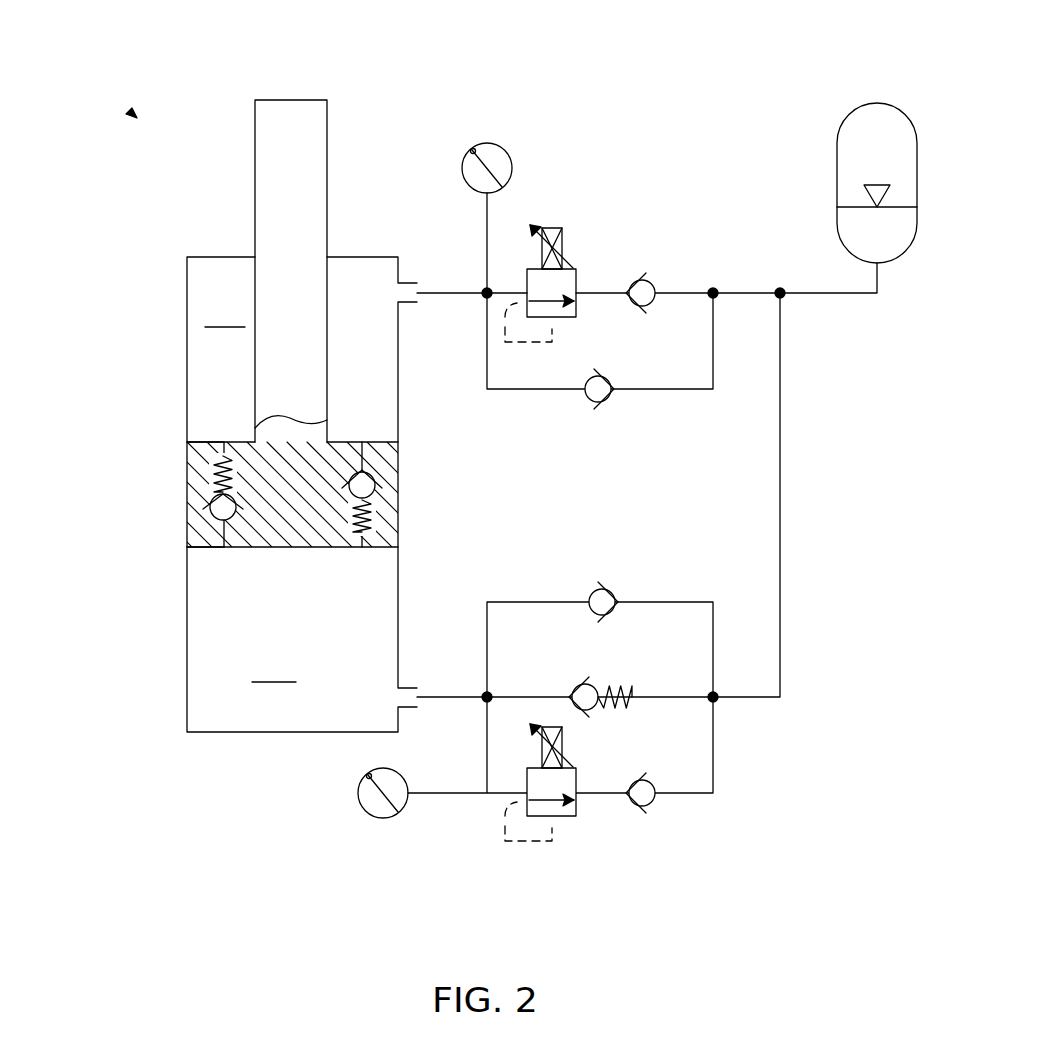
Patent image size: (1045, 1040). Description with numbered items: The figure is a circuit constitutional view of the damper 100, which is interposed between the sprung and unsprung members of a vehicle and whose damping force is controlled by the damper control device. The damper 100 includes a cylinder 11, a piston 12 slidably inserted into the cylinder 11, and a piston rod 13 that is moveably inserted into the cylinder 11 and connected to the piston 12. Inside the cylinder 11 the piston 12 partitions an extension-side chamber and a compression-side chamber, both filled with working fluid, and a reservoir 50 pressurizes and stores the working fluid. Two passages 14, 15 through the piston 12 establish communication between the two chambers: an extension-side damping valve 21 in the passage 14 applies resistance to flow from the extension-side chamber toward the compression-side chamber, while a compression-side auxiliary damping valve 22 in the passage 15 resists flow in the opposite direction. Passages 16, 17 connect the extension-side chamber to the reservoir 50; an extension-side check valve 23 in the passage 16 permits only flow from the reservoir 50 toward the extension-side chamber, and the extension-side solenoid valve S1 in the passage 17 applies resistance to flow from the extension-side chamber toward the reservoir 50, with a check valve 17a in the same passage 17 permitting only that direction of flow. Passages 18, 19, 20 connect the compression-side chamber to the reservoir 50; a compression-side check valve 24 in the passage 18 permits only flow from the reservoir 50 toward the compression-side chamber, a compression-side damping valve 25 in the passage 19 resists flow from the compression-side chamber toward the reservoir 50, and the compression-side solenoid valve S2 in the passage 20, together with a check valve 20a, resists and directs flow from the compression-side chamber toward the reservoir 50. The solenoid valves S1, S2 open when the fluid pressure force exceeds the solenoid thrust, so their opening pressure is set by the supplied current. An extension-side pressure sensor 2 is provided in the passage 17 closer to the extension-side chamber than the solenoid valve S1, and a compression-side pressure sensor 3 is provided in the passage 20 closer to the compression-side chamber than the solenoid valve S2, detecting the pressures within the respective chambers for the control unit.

The damper 100 is at (137, 118).
The cylinder 11 is at (187, 318).
The piston 12 is at (190, 538).
The piston rod 13 is at (255, 165).
The passage 14 is at (398, 448).
The passage 15 is at (210, 445).
The extension-side damping valve 21 is at (398, 500).
The compression-side auxiliary damping valve 22 is at (205, 506).
The extension-side pressure sensor 2 is at (505, 152).
The compression-side pressure sensor 3 is at (368, 812).
The extension-side solenoid valve S1 is at (573, 268).
The compression-side solenoid valve S2 is at (563, 820).
The passage 16 is at (680, 389).
The passage 17 is at (690, 293).
The check valve 17a is at (648, 283).
The passage 18 is at (678, 602).
The passage 19 is at (665, 697).
The passage 20 is at (713, 793).
The check valve 20a is at (645, 810).
The extension-side check valve 23 is at (590, 405).
The compression-side check valve 24 is at (600, 592).
The compression-side damping valve 25 is at (575, 686).
The reservoir 50 is at (837, 160).